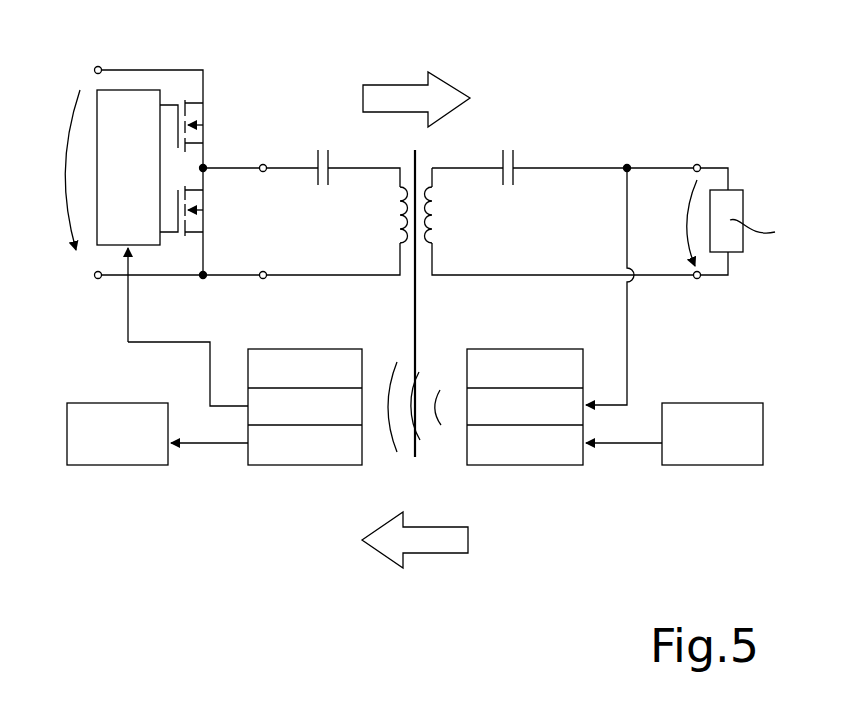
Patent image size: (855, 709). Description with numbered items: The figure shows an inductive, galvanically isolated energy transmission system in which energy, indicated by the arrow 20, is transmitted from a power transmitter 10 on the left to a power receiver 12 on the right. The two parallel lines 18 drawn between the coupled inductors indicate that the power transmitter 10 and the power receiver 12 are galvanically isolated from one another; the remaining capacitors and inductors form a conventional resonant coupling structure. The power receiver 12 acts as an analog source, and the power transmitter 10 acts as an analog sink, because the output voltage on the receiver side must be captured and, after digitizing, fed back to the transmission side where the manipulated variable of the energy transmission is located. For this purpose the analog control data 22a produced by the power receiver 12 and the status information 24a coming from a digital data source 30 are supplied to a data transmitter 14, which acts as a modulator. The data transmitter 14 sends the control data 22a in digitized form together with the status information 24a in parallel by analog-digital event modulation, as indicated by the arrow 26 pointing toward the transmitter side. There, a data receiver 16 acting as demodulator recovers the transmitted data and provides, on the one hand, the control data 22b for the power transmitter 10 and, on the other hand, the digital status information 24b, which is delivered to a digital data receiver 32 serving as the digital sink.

The power transmitter 10 is at (400, 52).
The power receiver 12 is at (746, 52).
The arrow indicating energy transmission 20 is at (405, 84).
The two parallel lines 18 is at (420, 158).
The control data 22a is at (627, 335).
The control data 22b is at (178, 342).
The status information 24a is at (620, 443).
The digital status information 24b is at (205, 443).
The data receiver 16 is at (300, 465).
The data transmitter 14 is at (530, 465).
The digital data receiver 32 is at (115, 465).
The digital data source 30 is at (712, 465).
The arrow indicating data transmission 26 is at (432, 537).